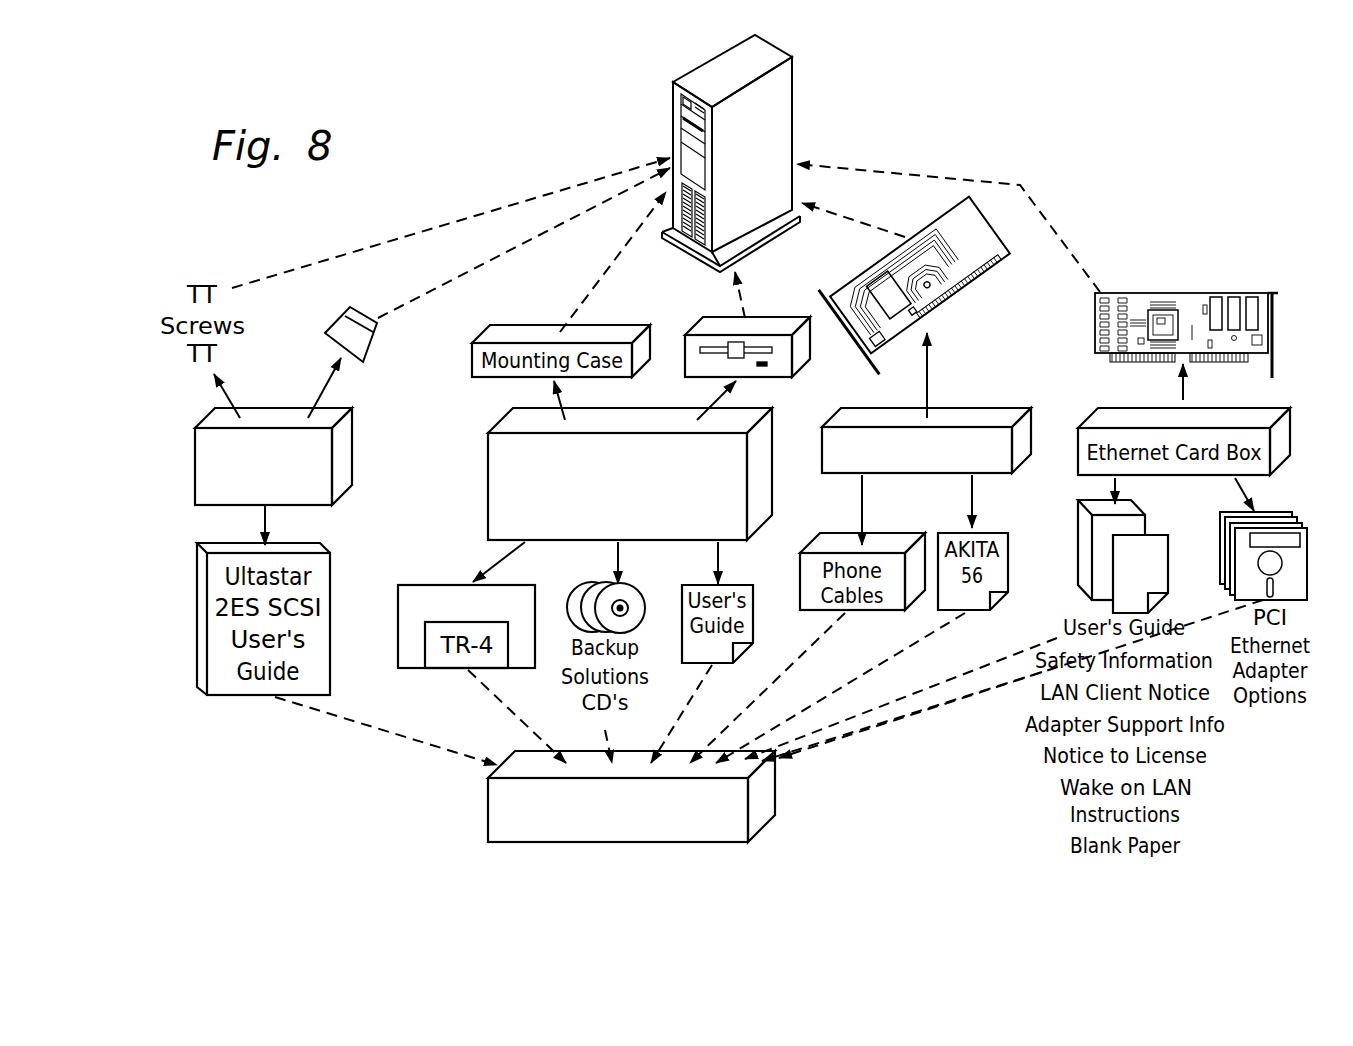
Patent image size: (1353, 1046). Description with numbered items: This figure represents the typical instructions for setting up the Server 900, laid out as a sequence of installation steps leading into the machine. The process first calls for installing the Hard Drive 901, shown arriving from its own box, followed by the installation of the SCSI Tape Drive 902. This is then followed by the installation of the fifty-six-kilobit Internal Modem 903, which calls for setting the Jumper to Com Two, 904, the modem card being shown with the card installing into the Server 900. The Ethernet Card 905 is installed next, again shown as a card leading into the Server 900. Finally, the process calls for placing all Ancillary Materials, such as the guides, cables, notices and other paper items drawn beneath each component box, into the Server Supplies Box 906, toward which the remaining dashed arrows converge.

The Server 900 is at (781, 115).
The Hard Drive 901 is at (195, 452).
The SCSI Tape Drive 902 is at (488, 455).
The 56K Internal Modem 903 is at (983, 418).
The Jumper set to Com 2 904 is at (993, 256).
The Ethernet card 905 is at (1212, 406).
The Server Supplies Box 906 is at (488, 803).